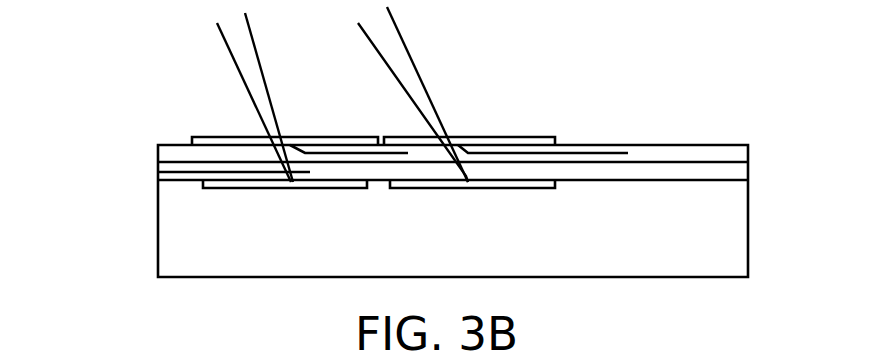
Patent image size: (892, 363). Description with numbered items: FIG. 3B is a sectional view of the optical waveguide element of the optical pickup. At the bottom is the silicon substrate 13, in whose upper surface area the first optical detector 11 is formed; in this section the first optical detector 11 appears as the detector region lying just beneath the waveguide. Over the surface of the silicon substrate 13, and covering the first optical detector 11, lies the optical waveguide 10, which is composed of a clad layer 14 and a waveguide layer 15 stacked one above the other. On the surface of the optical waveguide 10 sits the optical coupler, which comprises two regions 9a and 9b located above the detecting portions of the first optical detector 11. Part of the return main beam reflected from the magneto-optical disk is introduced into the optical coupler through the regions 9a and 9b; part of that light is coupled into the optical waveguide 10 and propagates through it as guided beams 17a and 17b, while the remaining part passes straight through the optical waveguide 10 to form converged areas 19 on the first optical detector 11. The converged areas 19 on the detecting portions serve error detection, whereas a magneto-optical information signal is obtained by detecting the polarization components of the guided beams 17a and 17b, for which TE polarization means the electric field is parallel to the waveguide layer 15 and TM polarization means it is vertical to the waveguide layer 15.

The optical waveguide 10 is at (97, 132).
The silicon substrate 13 is at (177, 228).
The clad layer 14 is at (165, 171).
The waveguide layer 15 is at (165, 152).
The region of the optical coupler 9a is at (492, 138).
The region of the optical coupler 9b is at (217, 136).
The guided beam 17a is at (537, 144).
The guided beam 17b is at (350, 138).
The first optical detector 11 is at (350, 189).
The converged areas 19 is at (291, 182).